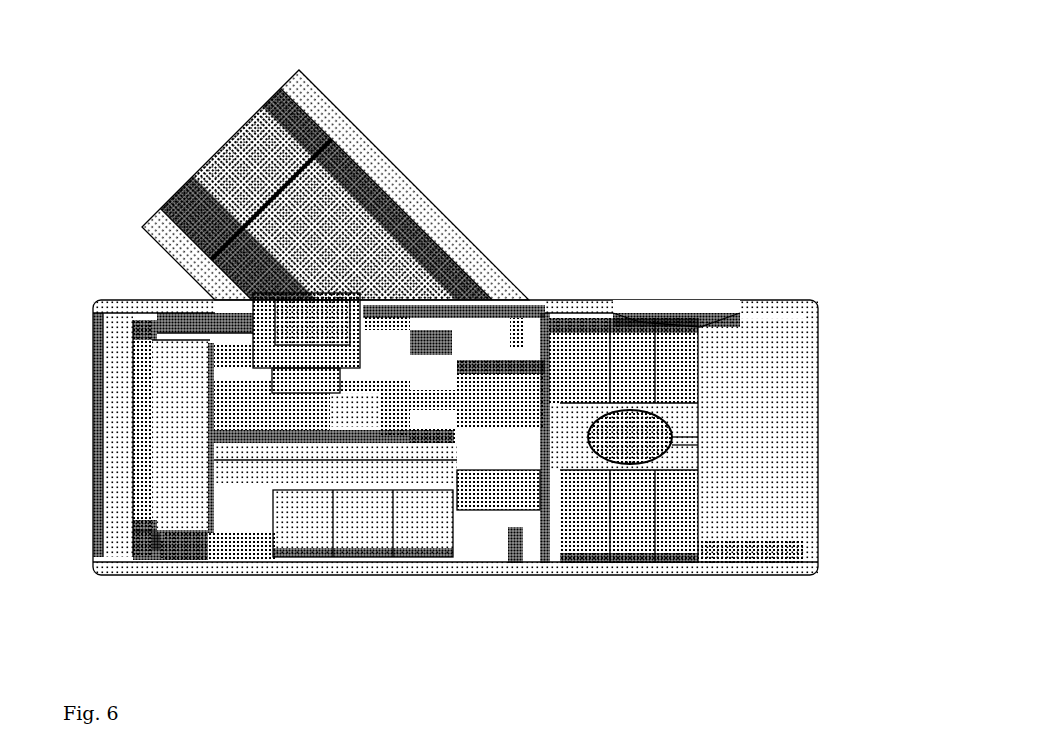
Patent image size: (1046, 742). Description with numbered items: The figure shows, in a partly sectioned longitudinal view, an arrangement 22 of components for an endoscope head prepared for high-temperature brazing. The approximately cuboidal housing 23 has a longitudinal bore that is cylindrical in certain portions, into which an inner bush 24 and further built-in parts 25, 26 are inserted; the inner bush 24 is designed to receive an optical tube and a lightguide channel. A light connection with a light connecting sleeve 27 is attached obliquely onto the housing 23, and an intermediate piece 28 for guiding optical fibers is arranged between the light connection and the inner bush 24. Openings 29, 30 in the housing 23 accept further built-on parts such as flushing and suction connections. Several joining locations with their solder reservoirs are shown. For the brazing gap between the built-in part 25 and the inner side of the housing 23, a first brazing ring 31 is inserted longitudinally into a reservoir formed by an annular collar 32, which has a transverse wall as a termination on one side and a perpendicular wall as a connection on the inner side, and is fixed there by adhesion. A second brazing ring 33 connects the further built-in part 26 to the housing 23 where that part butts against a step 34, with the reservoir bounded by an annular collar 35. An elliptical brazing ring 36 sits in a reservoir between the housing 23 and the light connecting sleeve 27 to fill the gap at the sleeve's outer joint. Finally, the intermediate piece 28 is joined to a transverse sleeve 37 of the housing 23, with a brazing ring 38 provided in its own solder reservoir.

The arrangement 22 is at (596, 103).
The housing 23 is at (347, 567).
The inner bush 24 is at (125, 366).
The built-in part 25 is at (763, 537).
The built-in part 26 is at (252, 550).
The light connecting sleeve 27 is at (382, 158).
The intermediate piece 28 is at (198, 300).
The opening 29 is at (628, 460).
The opening 30 is at (697, 300).
The first brazing ring 31 is at (508, 547).
The annular collar 32 is at (530, 545).
The second brazing ring 33 is at (150, 537).
The step 34 is at (153, 553).
The annular collar 35 is at (158, 545).
The elliptical brazing ring 36 is at (510, 290).
The transverse sleeve 37 is at (363, 341).
The brazing ring 38 is at (187, 345).